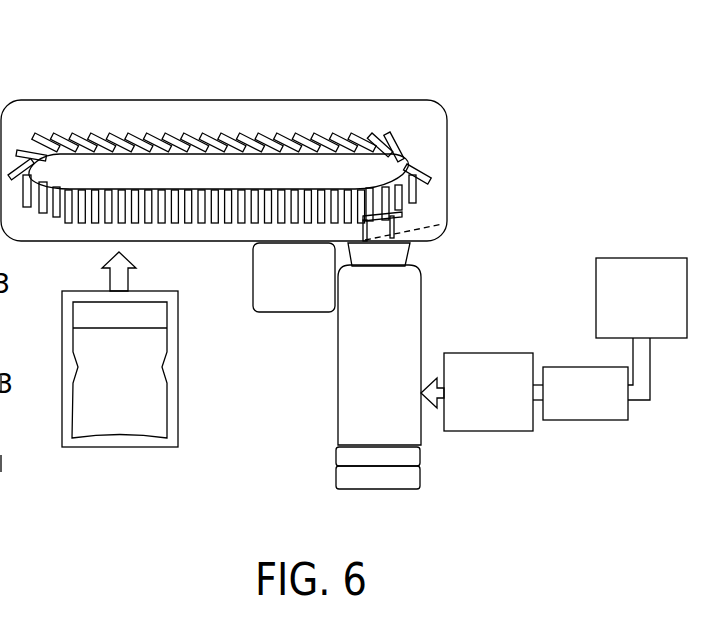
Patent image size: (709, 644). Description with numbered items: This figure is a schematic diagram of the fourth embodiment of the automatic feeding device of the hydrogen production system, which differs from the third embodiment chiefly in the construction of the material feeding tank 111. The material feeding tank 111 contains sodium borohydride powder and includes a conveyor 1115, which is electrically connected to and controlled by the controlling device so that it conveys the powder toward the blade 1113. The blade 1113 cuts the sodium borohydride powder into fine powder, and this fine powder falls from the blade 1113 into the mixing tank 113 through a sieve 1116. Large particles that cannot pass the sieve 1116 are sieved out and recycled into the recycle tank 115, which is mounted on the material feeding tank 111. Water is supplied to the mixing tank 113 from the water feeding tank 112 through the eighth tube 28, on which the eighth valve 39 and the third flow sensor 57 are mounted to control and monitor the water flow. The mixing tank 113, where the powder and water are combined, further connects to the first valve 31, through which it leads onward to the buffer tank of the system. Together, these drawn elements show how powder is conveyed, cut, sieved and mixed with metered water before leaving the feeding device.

The material feeding tank 111 is at (65, 100).
The conveyor 1115 is at (358, 134).
The blade 1113 is at (402, 211).
The sieve 1116 is at (437, 228).
The recycle tank 115 is at (253, 288).
The mixing tank 113 is at (338, 393).
The first valve 31 is at (421, 457).
The third flow sensor 57 is at (487, 431).
The eighth valve 39 is at (573, 420).
The water feeding tank 112 is at (638, 257).
The eighth tube 28 is at (660, 388).